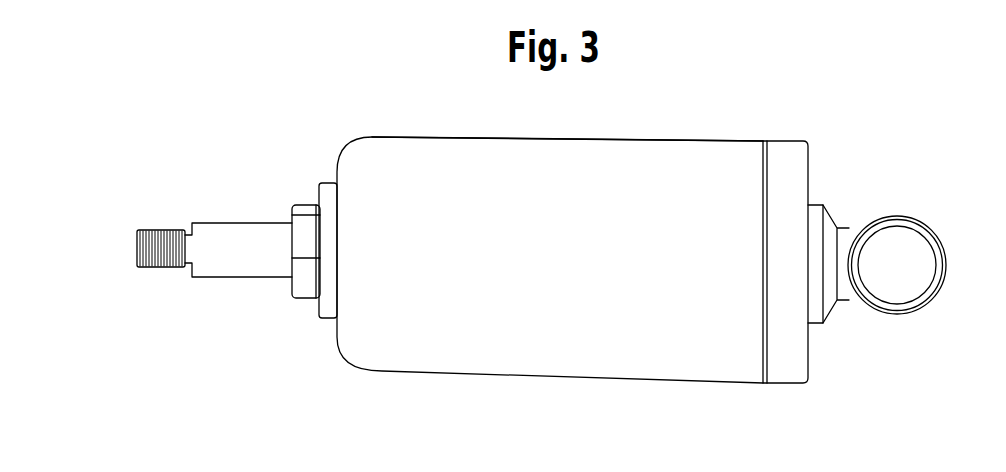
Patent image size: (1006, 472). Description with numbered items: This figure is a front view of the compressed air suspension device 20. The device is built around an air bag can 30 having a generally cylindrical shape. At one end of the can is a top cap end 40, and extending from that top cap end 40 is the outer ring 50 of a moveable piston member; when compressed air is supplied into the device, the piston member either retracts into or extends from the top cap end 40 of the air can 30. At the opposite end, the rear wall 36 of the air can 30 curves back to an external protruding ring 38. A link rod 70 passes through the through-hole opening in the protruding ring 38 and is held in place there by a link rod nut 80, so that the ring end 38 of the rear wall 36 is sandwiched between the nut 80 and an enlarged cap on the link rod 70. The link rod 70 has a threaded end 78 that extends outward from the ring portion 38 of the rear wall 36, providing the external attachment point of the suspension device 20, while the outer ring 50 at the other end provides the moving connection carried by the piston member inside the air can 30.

The compressed air suspension device 20 is at (906, 106).
The air bag can 30 is at (567, 117).
The rear wall 36 is at (512, 228).
The external protruding ring 38 is at (297, 287).
The top cap end 40 is at (805, 241).
The outer ring 50 is at (905, 248).
The link rod 70 is at (231, 281).
The threaded end 78 is at (133, 277).
The link rod nut 80 is at (281, 220).